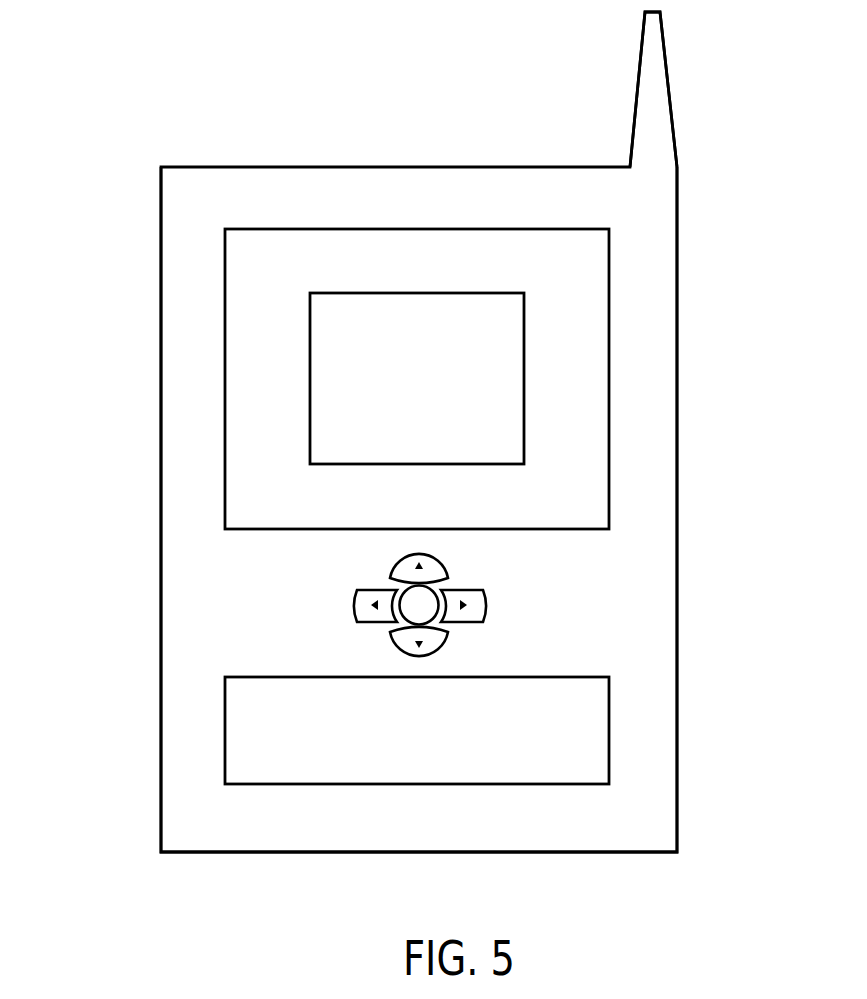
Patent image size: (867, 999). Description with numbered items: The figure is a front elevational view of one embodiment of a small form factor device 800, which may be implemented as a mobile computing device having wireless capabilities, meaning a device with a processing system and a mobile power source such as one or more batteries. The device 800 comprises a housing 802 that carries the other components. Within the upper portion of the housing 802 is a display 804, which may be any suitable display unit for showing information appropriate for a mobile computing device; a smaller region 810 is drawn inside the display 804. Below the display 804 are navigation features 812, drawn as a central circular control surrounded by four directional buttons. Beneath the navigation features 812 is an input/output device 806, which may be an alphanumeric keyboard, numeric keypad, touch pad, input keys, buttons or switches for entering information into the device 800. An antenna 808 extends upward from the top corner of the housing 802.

The small form factor device 800 is at (158, 104).
The housing 802 is at (161, 595).
The display 804 is at (609, 283).
The input/output (I/O) device 806 is at (609, 730).
The antenna 808 is at (638, 89).
The display window 810 is at (417, 292).
The navigation features 812 is at (520, 606).